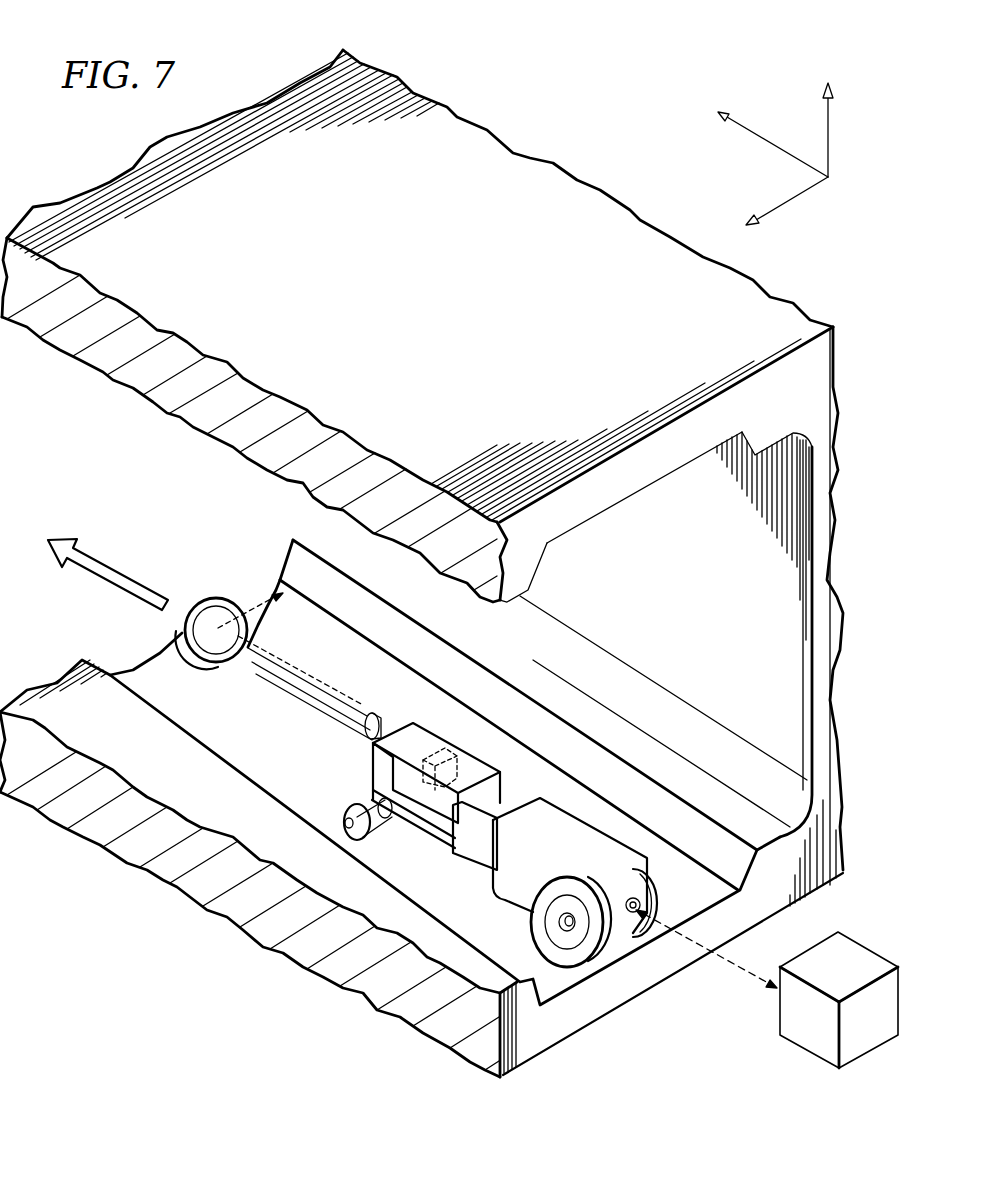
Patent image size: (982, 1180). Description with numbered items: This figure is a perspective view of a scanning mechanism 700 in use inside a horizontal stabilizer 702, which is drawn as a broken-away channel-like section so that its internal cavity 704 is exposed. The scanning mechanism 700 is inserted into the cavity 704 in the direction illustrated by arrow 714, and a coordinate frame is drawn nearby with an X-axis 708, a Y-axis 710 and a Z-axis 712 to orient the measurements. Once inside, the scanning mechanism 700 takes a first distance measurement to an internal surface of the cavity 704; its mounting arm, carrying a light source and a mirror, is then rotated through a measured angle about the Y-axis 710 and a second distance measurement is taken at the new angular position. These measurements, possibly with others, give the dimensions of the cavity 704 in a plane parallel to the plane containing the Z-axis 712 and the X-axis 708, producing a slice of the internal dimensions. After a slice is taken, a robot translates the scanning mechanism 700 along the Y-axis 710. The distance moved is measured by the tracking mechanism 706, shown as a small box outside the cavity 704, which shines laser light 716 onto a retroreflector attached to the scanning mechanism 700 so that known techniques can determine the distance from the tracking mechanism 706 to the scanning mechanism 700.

The scanning mechanism 700 is at (328, 666).
The horizontal stabilizer 702 is at (565, 157).
The cavity 704 is at (320, 785).
The tracking mechanism 706 is at (862, 957).
The X-axis 708 is at (793, 201).
The Y-axis 710 is at (753, 134).
The Z-axis 712 is at (830, 122).
The arrow 714 is at (117, 570).
The laser light 716 is at (746, 972).